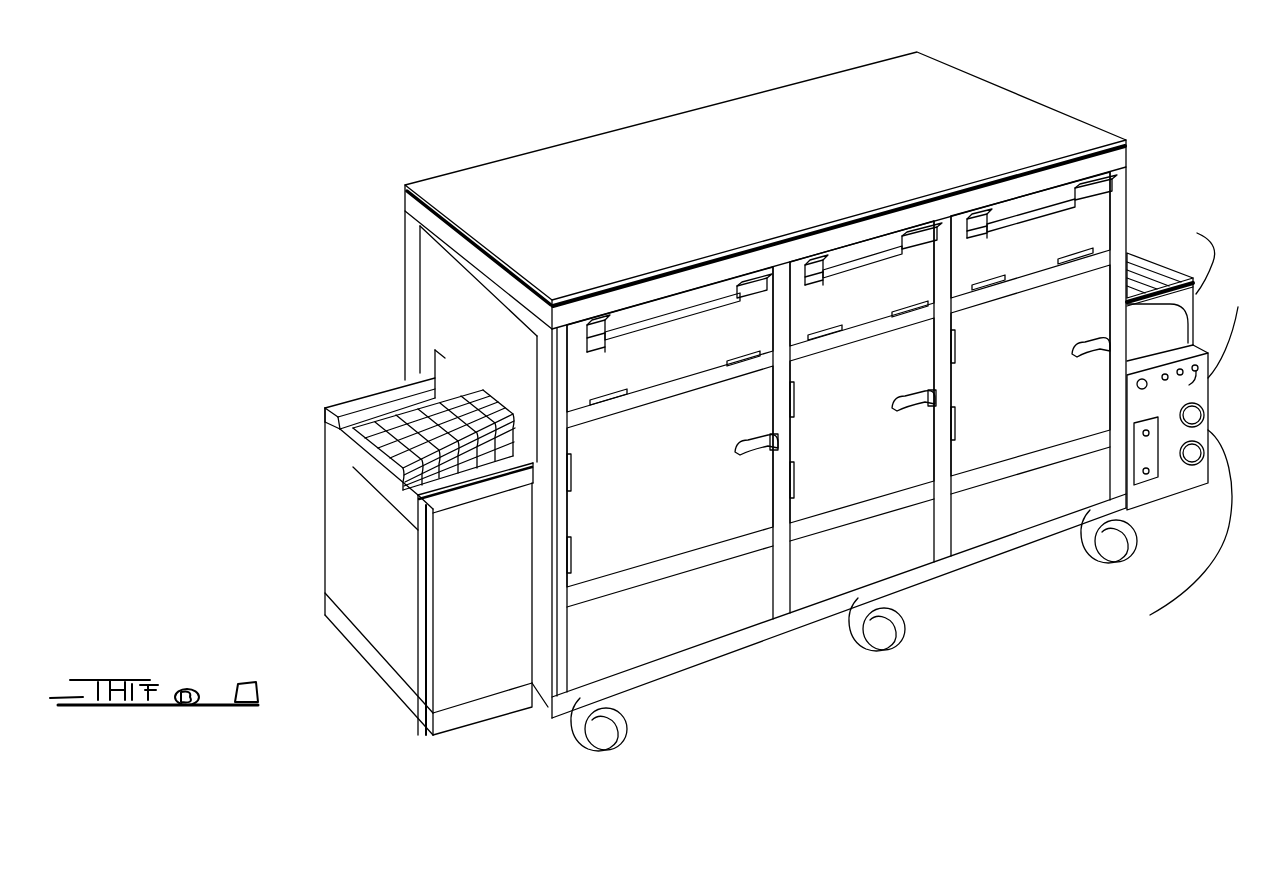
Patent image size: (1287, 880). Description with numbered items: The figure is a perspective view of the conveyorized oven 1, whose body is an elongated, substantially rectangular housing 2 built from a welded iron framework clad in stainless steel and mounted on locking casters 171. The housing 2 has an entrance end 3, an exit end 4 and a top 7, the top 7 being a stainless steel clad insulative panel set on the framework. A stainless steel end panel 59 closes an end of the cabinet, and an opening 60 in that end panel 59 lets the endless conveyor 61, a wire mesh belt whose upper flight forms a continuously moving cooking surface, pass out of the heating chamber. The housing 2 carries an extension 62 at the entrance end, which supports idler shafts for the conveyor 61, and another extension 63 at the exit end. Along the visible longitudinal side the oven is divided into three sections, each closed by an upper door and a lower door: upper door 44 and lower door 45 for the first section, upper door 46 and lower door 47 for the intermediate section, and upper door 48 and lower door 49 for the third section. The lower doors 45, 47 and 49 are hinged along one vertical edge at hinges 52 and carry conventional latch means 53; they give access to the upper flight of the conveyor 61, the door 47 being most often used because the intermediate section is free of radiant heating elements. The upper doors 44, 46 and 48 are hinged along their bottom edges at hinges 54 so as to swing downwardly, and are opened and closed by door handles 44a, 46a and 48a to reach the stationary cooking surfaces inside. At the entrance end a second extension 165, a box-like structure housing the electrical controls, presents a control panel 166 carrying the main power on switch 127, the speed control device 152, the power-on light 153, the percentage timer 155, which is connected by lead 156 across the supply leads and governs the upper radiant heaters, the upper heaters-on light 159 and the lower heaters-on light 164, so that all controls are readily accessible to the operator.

The oven 1 is at (1030, 103).
The housing 2 is at (745, 105).
The entrance end 3 is at (1128, 218).
The exit end 4 is at (447, 297).
The top 7 is at (570, 147).
The end panel 59 is at (452, 262).
The opening 60 is at (437, 372).
The endless conveyor 61 is at (330, 466).
The extension 62 is at (1171, 261).
The extension 63 is at (370, 535).
The upper door 44 is at (1037, 251).
The door handle 44a is at (1062, 203).
The lower door 45 is at (1012, 340).
The upper door 46 is at (877, 312).
The door handle 46a is at (873, 250).
The lower door 47 is at (867, 382).
The upper door 48 is at (686, 356).
The door handle 48a is at (660, 317).
The lower door 49 is at (681, 442).
The hinge 52 is at (573, 472).
The latch means 53 is at (736, 452).
The hinge 54 is at (617, 392).
The main power on switch 127 is at (1137, 384).
The speed control device 152 is at (1140, 471).
The power-on light 153 is at (1180, 368).
The percentage timer 155 is at (1180, 413).
The lead 156 is at (1180, 452).
The upper heaters-on light 159 is at (1127, 304).
The lower heaters-on light 164 is at (1175, 386).
The second extension 165 is at (1218, 339).
The control panel 166 is at (1168, 535).
The locking caster 171 is at (628, 728).